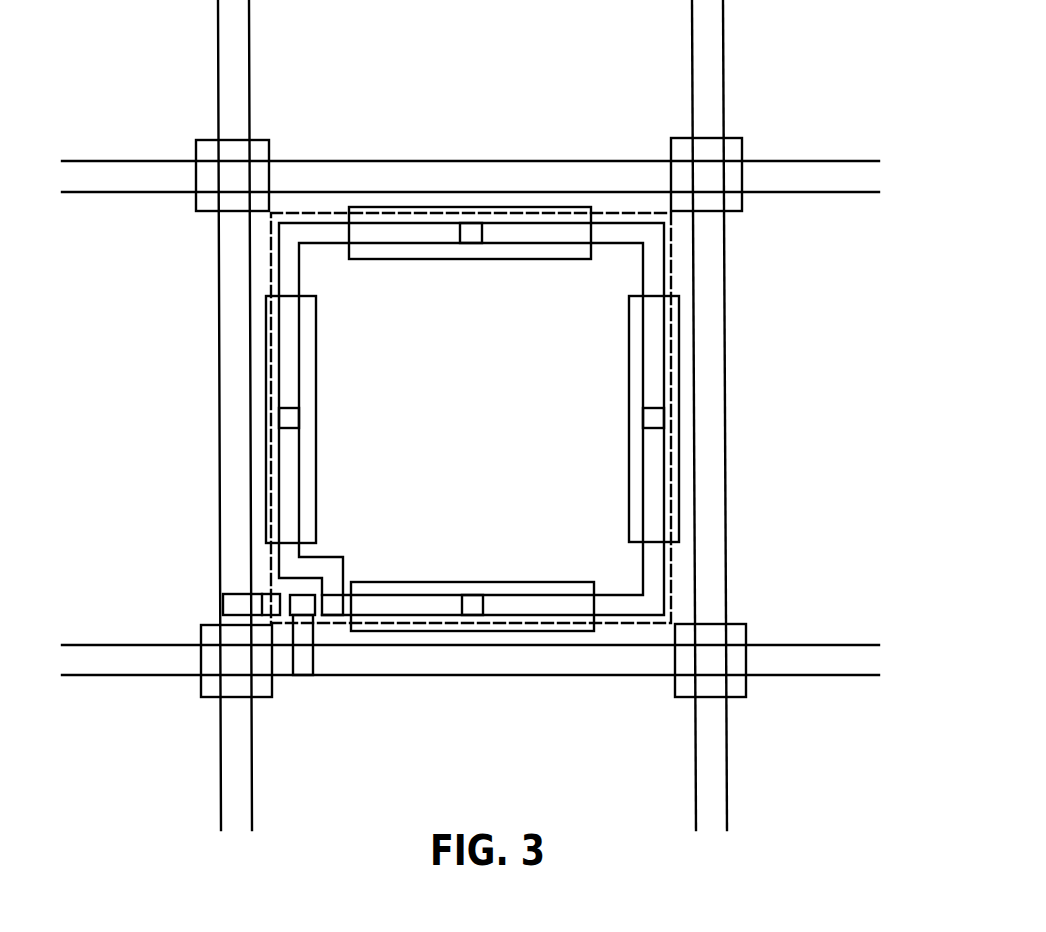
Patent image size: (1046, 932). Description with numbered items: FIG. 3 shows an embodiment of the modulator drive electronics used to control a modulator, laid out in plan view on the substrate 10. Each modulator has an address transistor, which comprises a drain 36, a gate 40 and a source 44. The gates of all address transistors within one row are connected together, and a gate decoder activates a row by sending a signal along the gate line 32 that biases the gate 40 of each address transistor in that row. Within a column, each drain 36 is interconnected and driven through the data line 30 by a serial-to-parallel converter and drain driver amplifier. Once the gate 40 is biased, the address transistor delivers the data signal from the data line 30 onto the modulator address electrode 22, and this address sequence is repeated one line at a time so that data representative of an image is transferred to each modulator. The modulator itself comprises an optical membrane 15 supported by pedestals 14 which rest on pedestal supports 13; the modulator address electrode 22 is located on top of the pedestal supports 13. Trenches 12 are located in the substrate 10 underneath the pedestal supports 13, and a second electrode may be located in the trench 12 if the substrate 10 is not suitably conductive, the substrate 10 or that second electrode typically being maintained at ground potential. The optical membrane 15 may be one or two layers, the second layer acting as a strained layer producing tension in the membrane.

The substrate 10 is at (127, 65).
The trench 12 is at (315, 397).
The pedestal support 13 is at (300, 332).
The pedestal 14 is at (482, 232).
The optical membrane 15 is at (270, 282).
The modulator address electrode 22 is at (272, 250).
The data line 30 is at (218, 465).
The gate line 32 is at (147, 677).
The drain 36 is at (255, 607).
The gate 40 is at (323, 602).
The source 44 is at (342, 607).